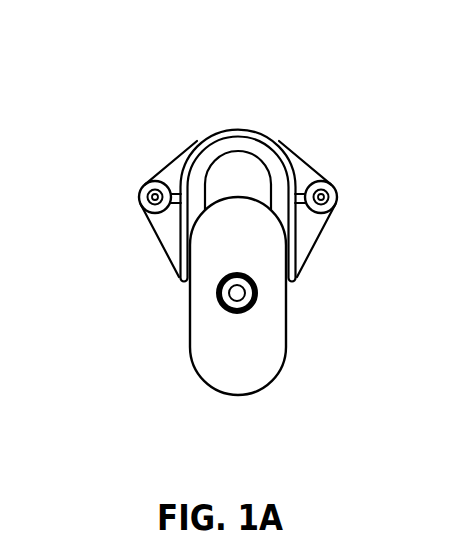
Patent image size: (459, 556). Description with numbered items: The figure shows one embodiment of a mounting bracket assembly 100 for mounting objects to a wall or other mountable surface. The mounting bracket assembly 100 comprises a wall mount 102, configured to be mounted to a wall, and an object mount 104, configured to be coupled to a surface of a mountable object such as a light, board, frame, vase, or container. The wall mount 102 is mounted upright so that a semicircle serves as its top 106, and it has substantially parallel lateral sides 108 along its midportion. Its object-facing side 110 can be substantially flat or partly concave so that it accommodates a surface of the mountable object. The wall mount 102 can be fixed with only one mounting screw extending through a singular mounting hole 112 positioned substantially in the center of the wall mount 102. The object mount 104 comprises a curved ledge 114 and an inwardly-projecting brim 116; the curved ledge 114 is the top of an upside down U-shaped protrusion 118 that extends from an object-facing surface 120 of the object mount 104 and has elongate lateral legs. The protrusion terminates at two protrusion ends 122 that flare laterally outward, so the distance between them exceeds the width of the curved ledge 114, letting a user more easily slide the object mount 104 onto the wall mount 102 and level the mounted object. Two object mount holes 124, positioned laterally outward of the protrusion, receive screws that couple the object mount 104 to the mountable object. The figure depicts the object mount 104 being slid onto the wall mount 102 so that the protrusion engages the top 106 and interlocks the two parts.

The mounting bracket assembly 100 is at (111, 61).
The wall mount 102 is at (206, 400).
The object mount 104 is at (149, 162).
The top 106 is at (242, 196).
The lateral sides 108 is at (190, 330).
The object-facing side 110 is at (250, 362).
The mounting hole 112 is at (256, 300).
The curved ledge 114 is at (243, 129).
The inwardly-projecting brim 116 is at (207, 160).
The upside down U-shaped protrusion 118 is at (280, 133).
The object-facing surface 120 is at (162, 245).
The protrusion ends 122 is at (177, 278).
The object mount holes 124 is at (139, 199).